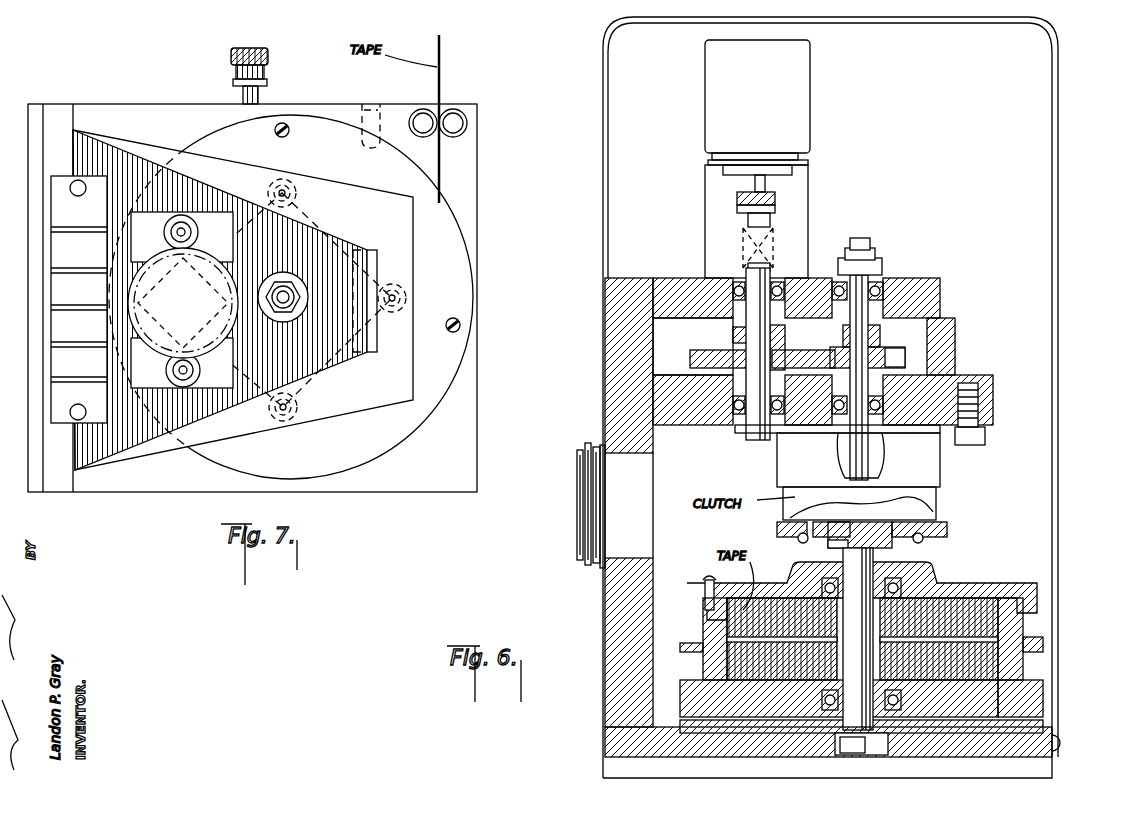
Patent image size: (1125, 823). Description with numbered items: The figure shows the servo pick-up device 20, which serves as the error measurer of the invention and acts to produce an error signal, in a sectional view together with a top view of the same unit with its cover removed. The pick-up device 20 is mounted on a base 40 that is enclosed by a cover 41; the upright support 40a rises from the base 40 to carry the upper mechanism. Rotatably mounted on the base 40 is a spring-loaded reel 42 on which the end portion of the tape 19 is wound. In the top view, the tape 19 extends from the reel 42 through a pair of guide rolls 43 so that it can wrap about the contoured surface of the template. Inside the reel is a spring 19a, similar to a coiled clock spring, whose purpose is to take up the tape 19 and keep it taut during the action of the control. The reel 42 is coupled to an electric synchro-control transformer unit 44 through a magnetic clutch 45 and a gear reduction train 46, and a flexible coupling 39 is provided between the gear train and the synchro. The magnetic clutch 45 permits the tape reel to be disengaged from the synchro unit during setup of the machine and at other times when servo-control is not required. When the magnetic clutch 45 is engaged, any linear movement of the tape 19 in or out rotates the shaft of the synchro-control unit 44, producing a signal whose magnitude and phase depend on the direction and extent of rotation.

In FIG. 7, the tape 19 is at (437, 85).
In FIG. 6, the tape 19 is at (990, 647).
In FIG. 6, the spring 19a is at (990, 613).
In FIG. 6, the pick-up device 20 is at (1067, 480).
In FIG. 6, the flexible coupling 39 is at (808, 207).
In FIG. 6, the base 40 is at (1050, 735).
In FIG. 6, the upright support 40a is at (625, 358).
In FIG. 6, the cover 41 is at (1060, 307).
In FIG. 6, the spring-loaded reel 42 is at (978, 582).
In FIG. 7, the guide rolls 43 is at (467, 123).
In FIG. 7, the synchro-control transformer unit 44 is at (233, 328).
In FIG. 6, the synchro-control transformer unit 44 is at (800, 131).
In FIG. 6, the magnetic clutch 45 is at (932, 503).
In FIG. 6, the gear reduction train 46 is at (877, 338).